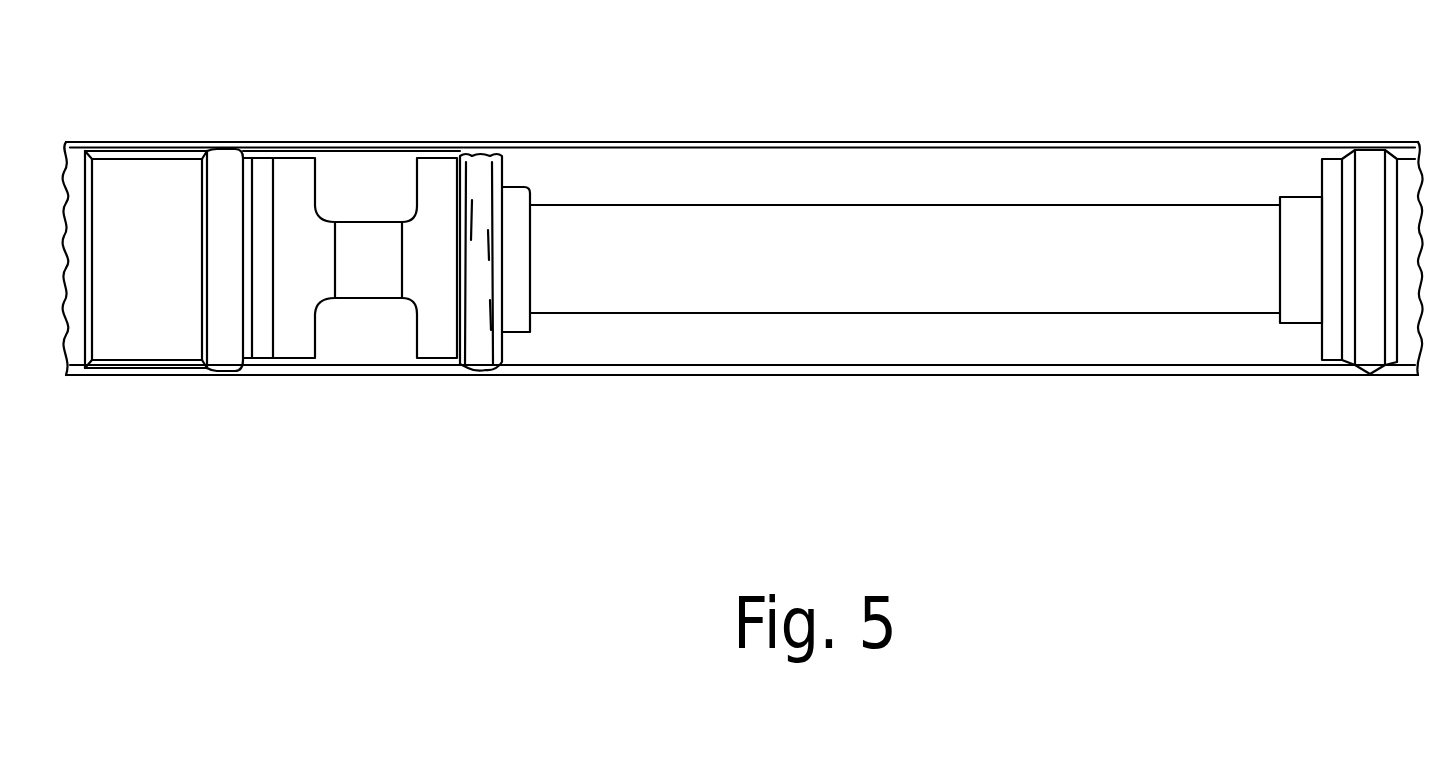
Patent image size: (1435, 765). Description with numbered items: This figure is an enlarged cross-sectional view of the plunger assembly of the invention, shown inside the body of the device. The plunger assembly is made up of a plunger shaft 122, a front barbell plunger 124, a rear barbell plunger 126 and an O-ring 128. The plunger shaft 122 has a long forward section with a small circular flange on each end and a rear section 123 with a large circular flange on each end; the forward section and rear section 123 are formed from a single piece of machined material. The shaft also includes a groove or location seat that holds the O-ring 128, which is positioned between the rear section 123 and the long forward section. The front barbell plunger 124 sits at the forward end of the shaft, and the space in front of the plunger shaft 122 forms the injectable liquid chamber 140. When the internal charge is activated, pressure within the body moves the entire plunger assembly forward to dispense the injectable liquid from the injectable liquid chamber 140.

The plunger shaft 122 is at (700, 252).
The rear section 123 is at (367, 245).
The front barbell plunger 124 is at (1367, 188).
The rear barbell plunger 126 is at (152, 195).
The O-ring 128 is at (478, 185).
The injectable liquid chamber 140 is at (975, 171).